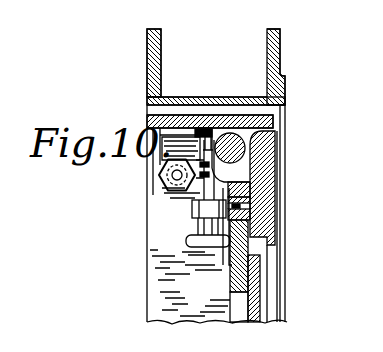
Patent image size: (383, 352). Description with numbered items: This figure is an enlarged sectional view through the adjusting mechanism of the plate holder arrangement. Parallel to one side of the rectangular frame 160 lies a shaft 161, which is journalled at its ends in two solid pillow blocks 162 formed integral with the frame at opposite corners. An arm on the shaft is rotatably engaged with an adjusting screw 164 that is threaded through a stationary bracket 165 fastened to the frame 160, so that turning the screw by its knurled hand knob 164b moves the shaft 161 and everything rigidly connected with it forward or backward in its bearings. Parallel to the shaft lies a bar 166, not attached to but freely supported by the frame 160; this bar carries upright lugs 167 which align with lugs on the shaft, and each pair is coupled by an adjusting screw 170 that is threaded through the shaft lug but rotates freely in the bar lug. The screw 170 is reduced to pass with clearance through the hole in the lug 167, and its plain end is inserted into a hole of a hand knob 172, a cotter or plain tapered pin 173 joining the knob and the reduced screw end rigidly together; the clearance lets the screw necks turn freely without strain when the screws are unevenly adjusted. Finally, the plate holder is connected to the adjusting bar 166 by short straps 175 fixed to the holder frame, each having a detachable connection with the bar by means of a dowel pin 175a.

The rectangular frame 160 is at (168, 118).
The shaft 161 is at (241, 140).
The pillow blocks 162 is at (243, 167).
The adjusting screw 164 is at (162, 182).
The knurled hand knob 164b is at (168, 192).
The stationary bracket 165 is at (181, 137).
The bar 166 is at (248, 188).
The upright lugs 167 is at (196, 219).
The adjusting screws 170 is at (204, 192).
The hand knob 172 is at (190, 252).
The cotter or plain tapered pin 173 is at (192, 240).
The straps 175 is at (230, 247).
The dowel pin 175a is at (248, 200).